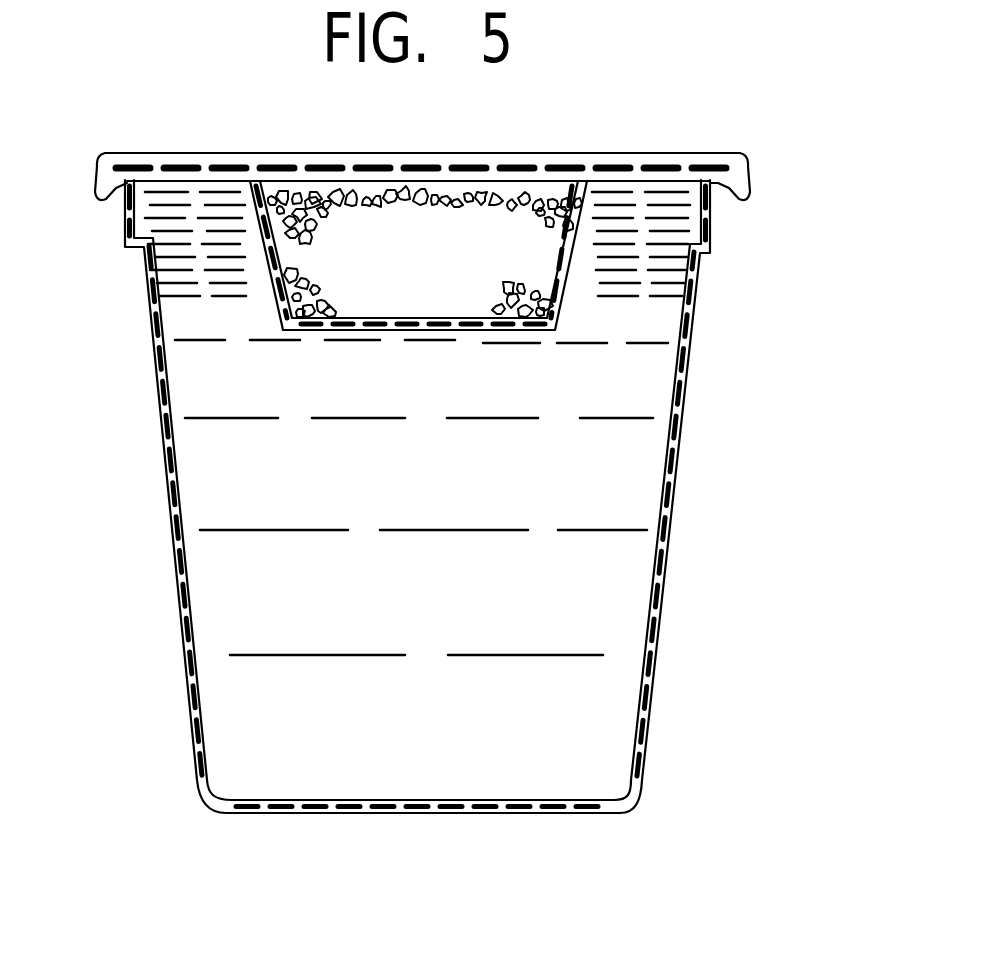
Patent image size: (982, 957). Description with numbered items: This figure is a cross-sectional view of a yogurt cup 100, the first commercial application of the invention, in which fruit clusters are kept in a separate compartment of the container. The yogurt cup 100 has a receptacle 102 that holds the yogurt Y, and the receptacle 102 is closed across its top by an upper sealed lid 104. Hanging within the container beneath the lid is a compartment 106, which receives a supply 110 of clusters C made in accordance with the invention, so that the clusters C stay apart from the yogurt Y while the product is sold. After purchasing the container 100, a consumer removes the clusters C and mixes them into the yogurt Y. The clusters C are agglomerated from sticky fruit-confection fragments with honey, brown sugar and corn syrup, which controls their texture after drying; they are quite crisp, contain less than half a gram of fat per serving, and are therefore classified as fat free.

The yogurt cup 100 is at (680, 483).
The receptacle 102 is at (660, 612).
The upper sealed lid 104 is at (672, 170).
The compartment 106 is at (577, 240).
The supply of clusters 110 is at (290, 285).
The yogurt Y is at (640, 398).
The clusters C is at (548, 215).